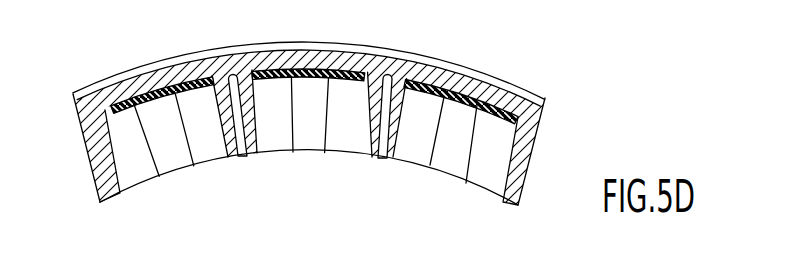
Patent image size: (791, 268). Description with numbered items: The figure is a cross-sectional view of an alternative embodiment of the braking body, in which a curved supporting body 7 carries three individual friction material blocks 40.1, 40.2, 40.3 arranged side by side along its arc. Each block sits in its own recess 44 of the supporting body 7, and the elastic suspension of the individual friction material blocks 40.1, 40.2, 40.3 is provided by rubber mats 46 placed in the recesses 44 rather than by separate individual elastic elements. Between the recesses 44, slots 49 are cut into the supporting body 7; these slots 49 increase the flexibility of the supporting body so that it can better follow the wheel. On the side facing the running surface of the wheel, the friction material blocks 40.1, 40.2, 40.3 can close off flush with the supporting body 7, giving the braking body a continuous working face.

The supporting body 7 is at (427, 65).
The rubber mat 46 is at (92, 167).
The recess 44 is at (220, 124).
The slot 49 is at (245, 128).
The friction material block 40.1 is at (445, 158).
The friction material block 40.2 is at (313, 135).
The friction material block 40.3 is at (140, 167).